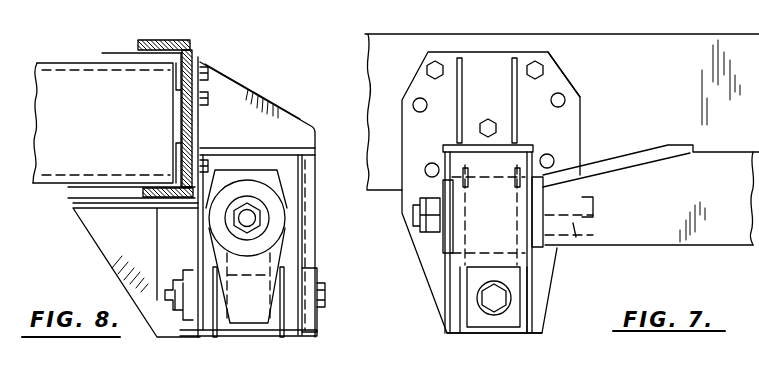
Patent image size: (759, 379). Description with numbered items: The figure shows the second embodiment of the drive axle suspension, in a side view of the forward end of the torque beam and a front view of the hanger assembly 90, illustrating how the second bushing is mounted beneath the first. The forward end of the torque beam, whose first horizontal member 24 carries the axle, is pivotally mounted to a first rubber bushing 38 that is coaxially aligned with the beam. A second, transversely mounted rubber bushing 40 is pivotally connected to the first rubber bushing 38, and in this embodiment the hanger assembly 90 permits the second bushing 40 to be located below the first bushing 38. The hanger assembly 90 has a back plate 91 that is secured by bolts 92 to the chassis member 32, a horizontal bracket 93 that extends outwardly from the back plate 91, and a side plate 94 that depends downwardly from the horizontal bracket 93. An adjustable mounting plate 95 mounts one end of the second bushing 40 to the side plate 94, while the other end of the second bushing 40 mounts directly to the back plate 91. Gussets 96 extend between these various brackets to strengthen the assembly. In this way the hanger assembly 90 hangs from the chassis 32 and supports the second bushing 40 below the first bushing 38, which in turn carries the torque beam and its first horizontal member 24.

In FIG. 7, the first horizontal member 24 is at (713, 240).
In FIG. 8, the chassis 32 is at (158, 40).
In FIG. 7, the chassis 32 is at (647, 43).
In FIG. 8, the first rubber bushing 38 is at (260, 218).
In FIG. 8, the second rubber bushing 40 is at (331, 297).
In FIG. 7, the second rubber bushing 40 is at (498, 306).
In FIG. 8, the hanger assembly 90 is at (267, 94).
In FIG. 7, the hanger assembly 90 is at (407, 245).
In FIG. 8, the back plate 91 is at (200, 58).
In FIG. 7, the back plate 91 is at (547, 63).
In FIG. 8, the bolts 92 is at (209, 97).
In FIG. 7, the bolts 92 is at (425, 68).
In FIG. 8, the horizontal bracket 93 is at (283, 150).
In FIG. 7, the horizontal bracket 93 is at (448, 146).
In FIG. 8, the side plate 94 is at (310, 245).
In FIG. 7, the side plate 94 is at (460, 262).
In FIG. 8, the adjustable mounting plate 95 is at (324, 331).
In FIG. 7, the adjustable mounting plate 95 is at (484, 324).
In FIG. 8, the gussets 96 is at (281, 113).
In FIG. 7, the gussets 96 is at (463, 67).